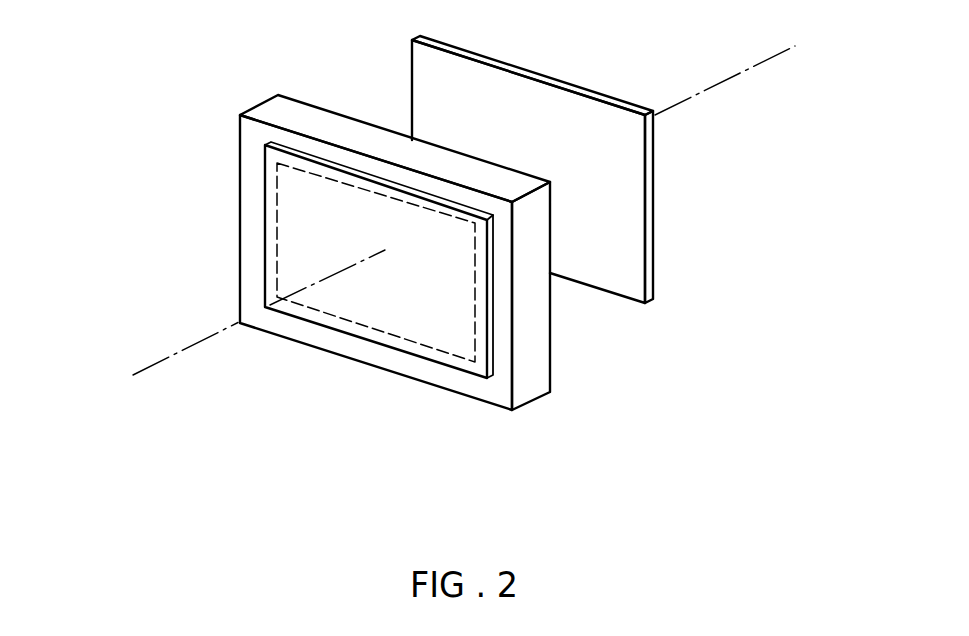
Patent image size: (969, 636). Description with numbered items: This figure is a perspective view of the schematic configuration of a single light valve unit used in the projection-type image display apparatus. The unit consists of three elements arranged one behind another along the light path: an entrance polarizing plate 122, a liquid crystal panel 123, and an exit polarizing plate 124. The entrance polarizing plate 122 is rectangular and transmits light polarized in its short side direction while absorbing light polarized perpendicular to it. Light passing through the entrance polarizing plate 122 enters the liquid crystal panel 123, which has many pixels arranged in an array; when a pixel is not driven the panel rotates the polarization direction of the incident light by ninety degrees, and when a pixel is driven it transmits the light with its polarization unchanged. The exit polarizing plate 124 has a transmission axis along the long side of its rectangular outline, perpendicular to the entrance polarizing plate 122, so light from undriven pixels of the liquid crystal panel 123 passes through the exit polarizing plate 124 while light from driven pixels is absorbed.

The entrance polarizing plate 122 is at (653, 247).
The liquid crystal panel 123 is at (550, 347).
The exit polarizing plate 124 is at (265, 238).